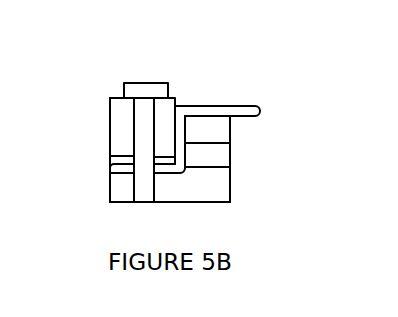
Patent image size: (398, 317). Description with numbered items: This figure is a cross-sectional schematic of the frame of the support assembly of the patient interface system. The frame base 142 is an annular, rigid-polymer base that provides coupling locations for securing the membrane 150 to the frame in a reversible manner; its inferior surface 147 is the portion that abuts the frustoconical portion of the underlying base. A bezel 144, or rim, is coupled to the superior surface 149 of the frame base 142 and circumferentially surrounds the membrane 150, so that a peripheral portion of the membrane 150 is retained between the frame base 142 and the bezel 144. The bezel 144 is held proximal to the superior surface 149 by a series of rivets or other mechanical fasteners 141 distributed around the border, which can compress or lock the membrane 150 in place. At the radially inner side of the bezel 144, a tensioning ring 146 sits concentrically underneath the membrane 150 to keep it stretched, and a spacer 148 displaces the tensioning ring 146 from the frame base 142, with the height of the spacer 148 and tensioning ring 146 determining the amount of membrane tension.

The mechanical fasteners 141 is at (145, 83).
The frame base 142 is at (115, 189).
The bezel 144 is at (110, 120).
The tensioning ring 146 is at (231, 128).
The inferior surface 147 is at (228, 202).
The spacer 148 is at (232, 157).
The superior surface 149 is at (110, 170).
The membrane 150 is at (237, 106).